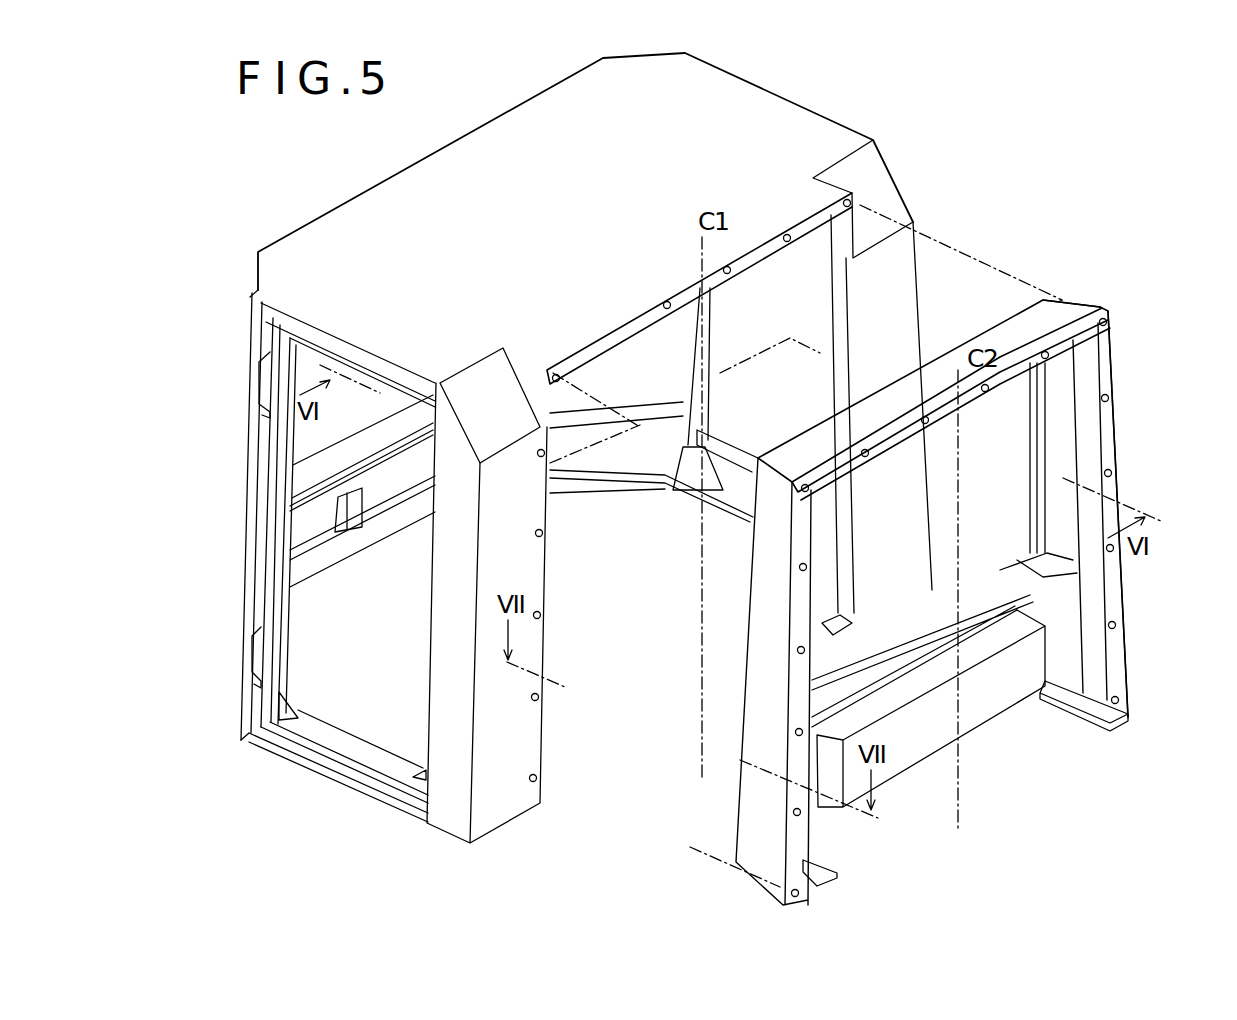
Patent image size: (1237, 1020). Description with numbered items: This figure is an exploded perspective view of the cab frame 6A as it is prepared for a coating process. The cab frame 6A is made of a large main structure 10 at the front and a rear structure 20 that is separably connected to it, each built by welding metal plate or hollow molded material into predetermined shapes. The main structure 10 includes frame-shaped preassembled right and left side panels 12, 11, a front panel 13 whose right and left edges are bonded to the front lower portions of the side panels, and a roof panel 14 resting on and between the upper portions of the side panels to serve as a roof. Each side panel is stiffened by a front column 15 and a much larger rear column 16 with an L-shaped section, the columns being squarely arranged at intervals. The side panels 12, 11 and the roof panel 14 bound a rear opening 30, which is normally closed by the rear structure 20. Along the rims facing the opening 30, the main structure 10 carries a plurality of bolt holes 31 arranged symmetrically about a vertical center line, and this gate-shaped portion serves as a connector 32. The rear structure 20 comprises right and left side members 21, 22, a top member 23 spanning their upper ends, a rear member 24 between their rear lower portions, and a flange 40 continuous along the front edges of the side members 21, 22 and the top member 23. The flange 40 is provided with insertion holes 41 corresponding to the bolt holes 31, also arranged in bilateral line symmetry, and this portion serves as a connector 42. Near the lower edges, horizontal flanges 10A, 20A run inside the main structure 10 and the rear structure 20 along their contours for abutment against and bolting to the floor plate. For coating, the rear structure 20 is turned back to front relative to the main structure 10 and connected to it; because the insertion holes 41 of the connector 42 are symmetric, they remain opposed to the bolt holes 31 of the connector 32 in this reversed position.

The main structure 10 is at (848, 135).
The cab frame 6A is at (1051, 197).
The roof panel 14 is at (747, 102).
The rear structure 20 is at (1035, 320).
The connector 32 is at (636, 318).
The bolt holes 31 is at (727, 272).
The front column 15 is at (273, 625).
The rear column 16 is at (540, 563).
The top member 23 is at (893, 392).
The connector 42 is at (967, 403).
The flange 40 is at (1105, 370).
The right side member 21 is at (1092, 422).
The insertion holes 41 is at (1110, 474).
The front panel 13 is at (355, 447).
The horizontal flange 10A is at (366, 533).
The left side panel 11 is at (348, 735).
The right side panel 12 is at (740, 445).
The rear opening 30 is at (624, 576).
The left side member 22 is at (755, 645).
The rear member 24 is at (977, 607).
The horizontal flange 20A is at (1062, 697).